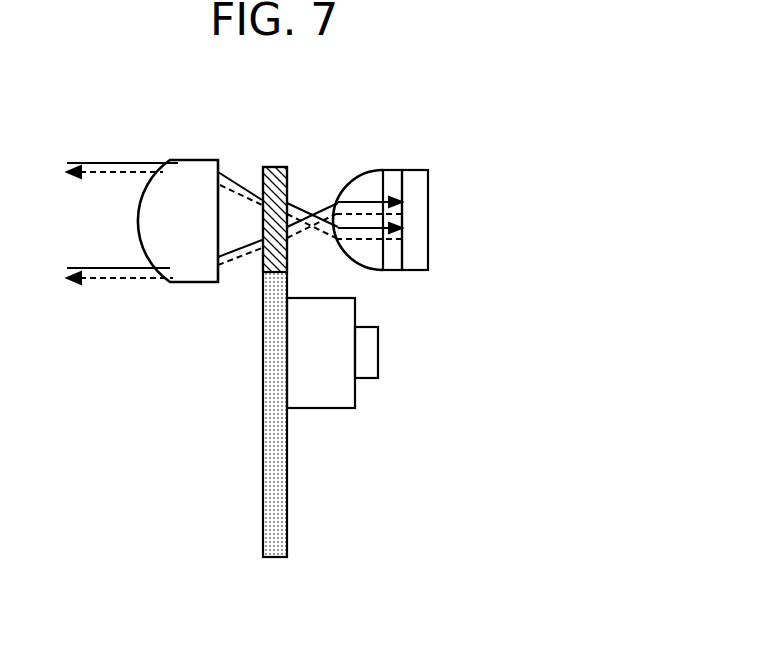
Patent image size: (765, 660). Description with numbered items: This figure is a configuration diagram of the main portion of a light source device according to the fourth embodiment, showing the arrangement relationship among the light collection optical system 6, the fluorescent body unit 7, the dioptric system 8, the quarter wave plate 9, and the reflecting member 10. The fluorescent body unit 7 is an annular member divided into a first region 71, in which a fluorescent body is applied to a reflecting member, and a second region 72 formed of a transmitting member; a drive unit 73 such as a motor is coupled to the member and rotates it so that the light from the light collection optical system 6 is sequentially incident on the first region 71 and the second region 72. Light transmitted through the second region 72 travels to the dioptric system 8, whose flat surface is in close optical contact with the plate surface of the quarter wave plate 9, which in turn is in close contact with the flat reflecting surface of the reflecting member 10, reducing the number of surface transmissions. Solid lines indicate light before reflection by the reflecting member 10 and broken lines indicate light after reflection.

The light collection optical system 6 is at (197, 160).
The fluorescent body unit 7 is at (331, 362).
The first region 71 is at (287, 518).
The second region 72 is at (274, 167).
The drive unit 73 is at (355, 393).
The dioptric system 8 is at (353, 183).
The quarter wave plate 9 is at (392, 170).
The reflecting member 10 is at (428, 200).